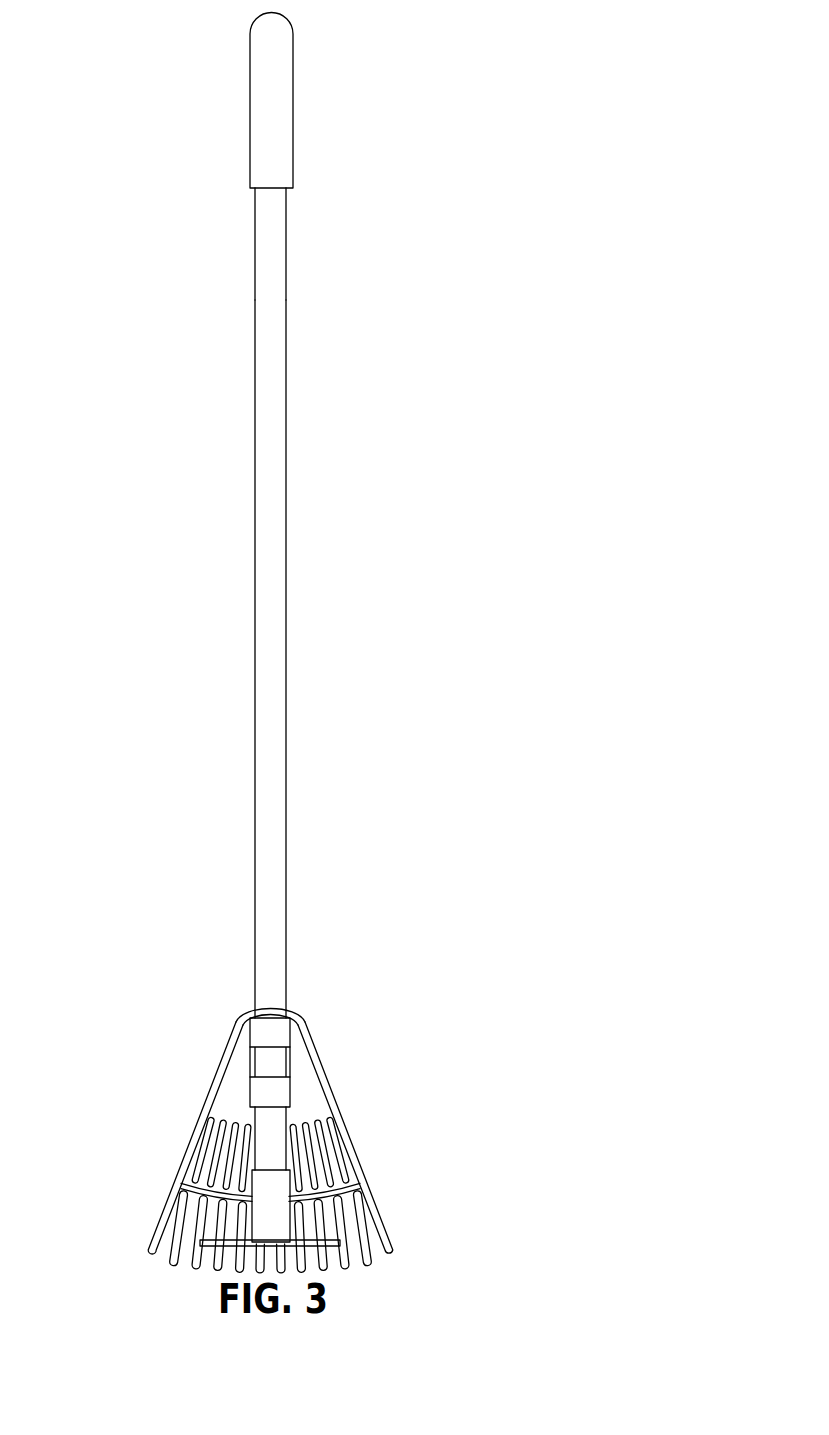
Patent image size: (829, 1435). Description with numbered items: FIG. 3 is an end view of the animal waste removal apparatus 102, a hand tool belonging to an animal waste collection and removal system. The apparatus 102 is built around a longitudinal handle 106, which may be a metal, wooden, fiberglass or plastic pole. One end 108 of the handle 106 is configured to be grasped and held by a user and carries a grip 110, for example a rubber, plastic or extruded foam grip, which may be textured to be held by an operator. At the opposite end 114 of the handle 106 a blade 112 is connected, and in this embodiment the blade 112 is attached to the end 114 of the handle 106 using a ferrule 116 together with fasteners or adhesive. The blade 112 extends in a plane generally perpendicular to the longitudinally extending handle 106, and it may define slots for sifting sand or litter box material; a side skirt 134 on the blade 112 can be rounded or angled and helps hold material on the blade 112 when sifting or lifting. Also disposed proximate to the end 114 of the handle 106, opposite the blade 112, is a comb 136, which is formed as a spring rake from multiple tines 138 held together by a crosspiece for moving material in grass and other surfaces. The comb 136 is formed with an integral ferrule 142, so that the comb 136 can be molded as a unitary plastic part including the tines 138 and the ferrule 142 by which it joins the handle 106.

The animal waste removal apparatus 102 is at (388, 310).
The longitudinal handle 106 is at (287, 467).
The end of the handle 108 is at (285, 235).
The grip 110 is at (293, 100).
The blade 112 is at (340, 1240).
The opposite end of the handle 114 is at (287, 1150).
The ferrule 116 is at (268, 1188).
The side skirt 134 is at (203, 1240).
The comb 136 is at (387, 1232).
The tines 138 is at (177, 1262).
The integral ferrule 142 is at (272, 1030).